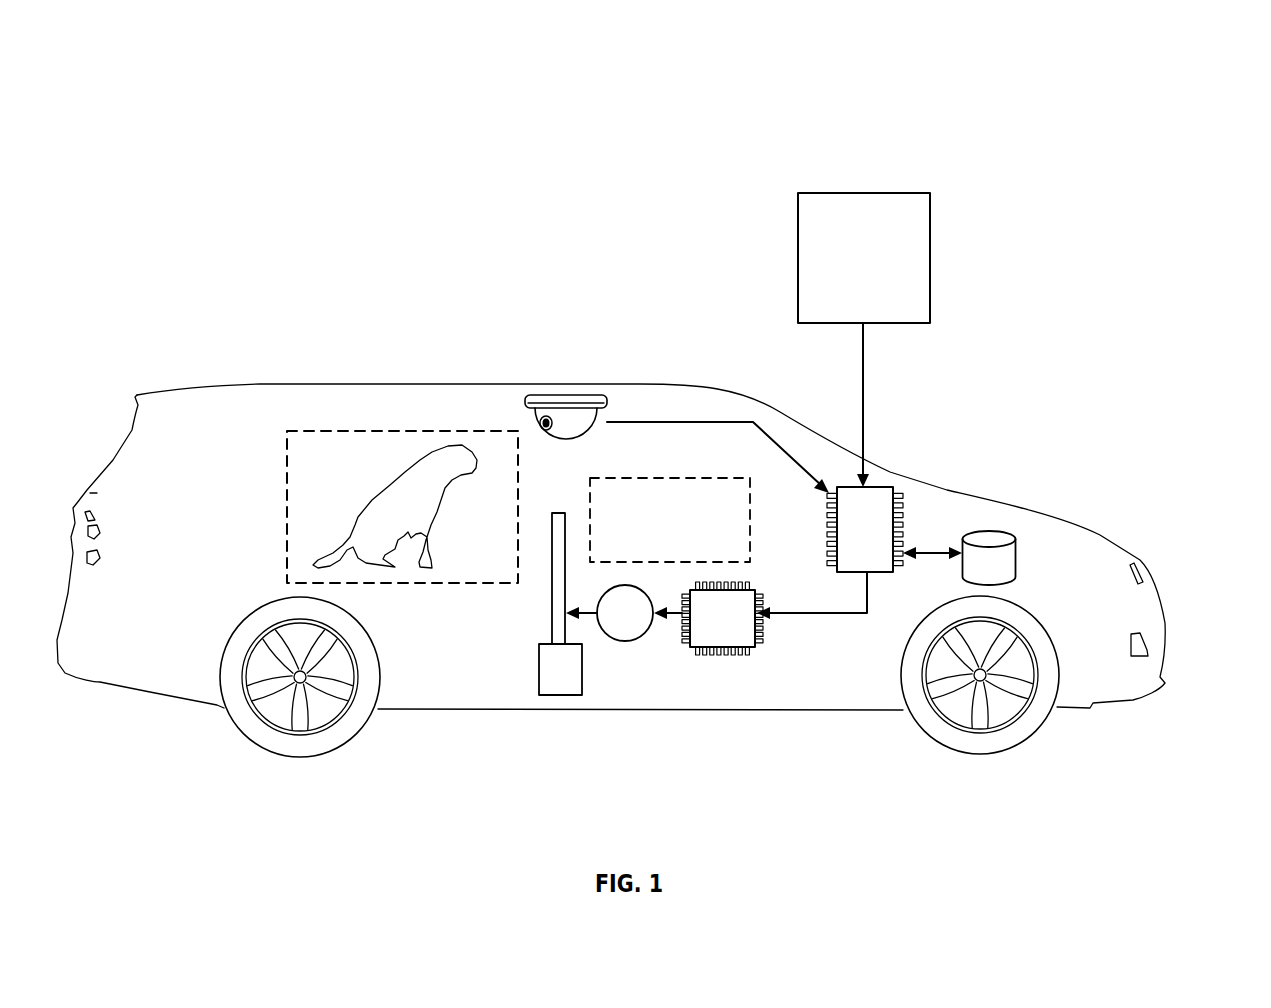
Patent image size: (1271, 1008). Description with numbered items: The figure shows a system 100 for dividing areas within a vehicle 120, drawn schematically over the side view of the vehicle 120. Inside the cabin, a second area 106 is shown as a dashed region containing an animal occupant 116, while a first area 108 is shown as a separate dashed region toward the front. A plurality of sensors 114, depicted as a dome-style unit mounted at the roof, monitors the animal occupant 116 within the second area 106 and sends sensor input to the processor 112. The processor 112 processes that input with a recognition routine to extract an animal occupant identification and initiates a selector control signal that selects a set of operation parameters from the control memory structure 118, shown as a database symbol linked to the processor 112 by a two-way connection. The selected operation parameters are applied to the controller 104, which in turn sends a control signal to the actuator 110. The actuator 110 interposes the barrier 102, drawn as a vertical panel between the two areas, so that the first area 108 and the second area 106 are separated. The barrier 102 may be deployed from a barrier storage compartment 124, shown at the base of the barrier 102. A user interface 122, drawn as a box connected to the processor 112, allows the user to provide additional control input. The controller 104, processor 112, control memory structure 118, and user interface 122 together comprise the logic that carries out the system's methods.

The system for dividing areas within a vehicle 100 is at (1143, 108).
The barrier 102 is at (550, 609).
The controller 104 is at (708, 631).
The second area 106 is at (345, 432).
The first area 108 is at (656, 535).
The actuator 110 is at (611, 626).
The processor 112 is at (852, 544).
The plurality of sensors 114 is at (570, 393).
The animal occupant 116 is at (439, 577).
The control memory structure 118 is at (975, 576).
The vehicle 120 is at (430, 710).
The user interface 122 is at (849, 299).
The barrier storage compartment 124 is at (546, 682).